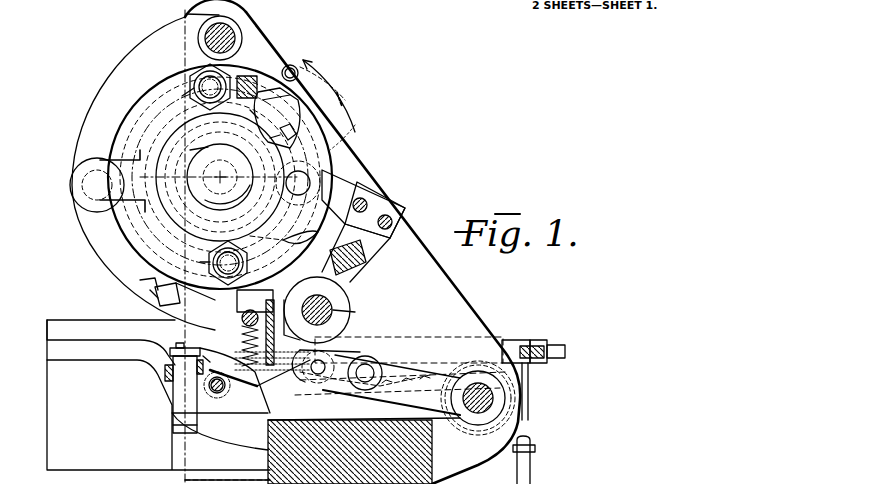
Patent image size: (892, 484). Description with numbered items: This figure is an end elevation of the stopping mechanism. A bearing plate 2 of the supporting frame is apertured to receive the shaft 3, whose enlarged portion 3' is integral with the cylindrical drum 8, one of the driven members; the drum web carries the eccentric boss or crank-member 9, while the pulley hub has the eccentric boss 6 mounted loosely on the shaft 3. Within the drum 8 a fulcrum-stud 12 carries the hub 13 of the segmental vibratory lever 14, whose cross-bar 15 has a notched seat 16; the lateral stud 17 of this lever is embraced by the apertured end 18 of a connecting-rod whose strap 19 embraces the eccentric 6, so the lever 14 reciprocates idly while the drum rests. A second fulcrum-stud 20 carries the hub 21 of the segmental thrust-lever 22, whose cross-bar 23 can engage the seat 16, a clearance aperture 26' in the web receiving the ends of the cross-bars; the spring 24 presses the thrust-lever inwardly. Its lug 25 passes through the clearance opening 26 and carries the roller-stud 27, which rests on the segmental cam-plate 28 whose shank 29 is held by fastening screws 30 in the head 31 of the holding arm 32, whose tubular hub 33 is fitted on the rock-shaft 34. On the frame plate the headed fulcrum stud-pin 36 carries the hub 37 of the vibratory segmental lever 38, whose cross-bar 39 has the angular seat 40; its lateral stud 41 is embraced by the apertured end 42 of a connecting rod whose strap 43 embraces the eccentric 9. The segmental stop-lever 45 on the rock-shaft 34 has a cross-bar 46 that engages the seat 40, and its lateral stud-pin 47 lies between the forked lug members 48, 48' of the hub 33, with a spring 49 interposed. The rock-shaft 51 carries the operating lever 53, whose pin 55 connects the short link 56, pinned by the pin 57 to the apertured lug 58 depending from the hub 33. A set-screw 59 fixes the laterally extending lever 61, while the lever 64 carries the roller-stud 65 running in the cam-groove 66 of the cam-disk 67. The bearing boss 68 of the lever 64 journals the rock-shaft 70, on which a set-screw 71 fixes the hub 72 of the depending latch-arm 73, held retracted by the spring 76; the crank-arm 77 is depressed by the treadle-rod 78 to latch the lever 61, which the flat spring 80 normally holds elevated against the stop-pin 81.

The bearing plates 2 is at (172, 320).
The shaft 3 is at (220, 169).
The enlarged portion 3' is at (227, 196).
The eccentric boss 6 is at (205, 172).
The cylindrical drum 8 is at (285, 255).
The eccentric boss or crank-member 9 is at (220, 177).
The fulcrum-stud 12 is at (228, 263).
The hub 13 is at (198, 264).
The segmental vibratory lever 14 is at (275, 222).
The cross-bar 15 is at (272, 130).
The notched seat 16 is at (280, 130).
The lateral stud 17 is at (300, 230).
The apertured end 18 is at (298, 177).
The strap 19 is at (196, 145).
The second fulcrum-stud 20 is at (210, 87).
The hub 21 is at (178, 97).
The segmental thrust-lever 22 is at (277, 118).
The cross-bar 23 is at (300, 132).
The spring 24 is at (247, 76).
The outwardly projecting lug 25 is at (289, 65).
The clearance opening 26 is at (326, 97).
The clearance aperture 26' is at (242, 115).
The roller-stud 27 is at (327, 86).
The segmental cam-plate 28 is at (335, 140).
The shank 29 is at (363, 198).
The fastening screws 30 is at (372, 213).
The head 31 is at (385, 200).
The holding arm 32 is at (356, 253).
The tubular hub 33 is at (317, 314).
The rock-shaft 34 is at (353, 316).
The headed fulcrum stud-pin 36 is at (232, 28).
The hub 37 is at (193, 14).
The vibratory segmental lever 38 is at (143, 173).
The cross-bar 39 is at (139, 278).
The angular seat 40 is at (150, 292).
The lateral stud 41 is at (84, 192).
The apertured end 42 is at (116, 175).
The strap 43 is at (152, 143).
The segmental stop-lever 45 is at (195, 295).
The cross-bar 46 is at (160, 300).
The lateral stud-pin 47 is at (292, 320).
The forked lug member 48 is at (232, 327).
The forked lug member 48' is at (248, 309).
The spring 49 is at (240, 330).
The rock-shaft 51 is at (480, 412).
The operating lever 53 is at (391, 402).
The pin 55 is at (372, 366).
The short link 56 is at (355, 362).
The pin 57 is at (300, 375).
The apertured lug 58 is at (330, 392).
The set-screw 59 is at (530, 385).
The laterally extending lever 61 is at (220, 431).
The laterally extending lever 64 is at (341, 452).
The roller-stud 65 is at (217, 393).
The cam-groove 66 is at (47, 346).
The cam-disk 67 is at (158, 420).
The bearing boss 68 is at (506, 340).
The rock-shaft 70 is at (556, 346).
The set-screw 71 is at (176, 346).
The hub 72 is at (173, 378).
The latch-arm 73 is at (180, 406).
The spring 76 is at (538, 340).
The crank-arm 77 is at (531, 478).
The treadle-rod 78 is at (530, 400).
The flat spring 80 is at (245, 386).
The stop-pin 81 is at (235, 380).